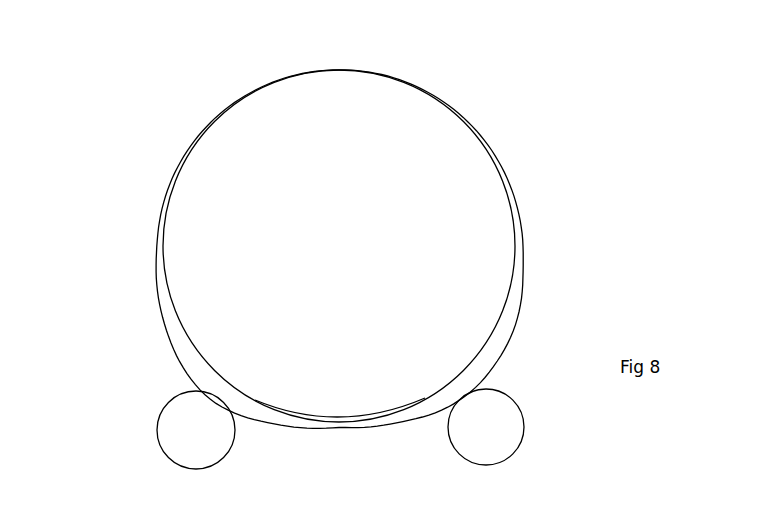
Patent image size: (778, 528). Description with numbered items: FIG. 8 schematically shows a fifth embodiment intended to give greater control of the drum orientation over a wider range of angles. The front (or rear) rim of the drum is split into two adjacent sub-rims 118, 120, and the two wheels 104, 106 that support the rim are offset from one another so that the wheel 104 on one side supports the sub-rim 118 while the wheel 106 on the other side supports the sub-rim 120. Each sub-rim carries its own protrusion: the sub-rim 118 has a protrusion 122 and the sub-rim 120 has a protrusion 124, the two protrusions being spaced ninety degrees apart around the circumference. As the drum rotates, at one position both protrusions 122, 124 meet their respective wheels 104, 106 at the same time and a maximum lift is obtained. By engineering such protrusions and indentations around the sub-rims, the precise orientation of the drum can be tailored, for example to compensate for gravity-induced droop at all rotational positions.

The wheel 104 is at (195, 437).
The wheel 106 is at (502, 432).
The sub-rim 118 is at (158, 250).
The sub-rim 120 is at (525, 268).
The protrusion 122 is at (195, 380).
The protrusion 124 is at (483, 375).